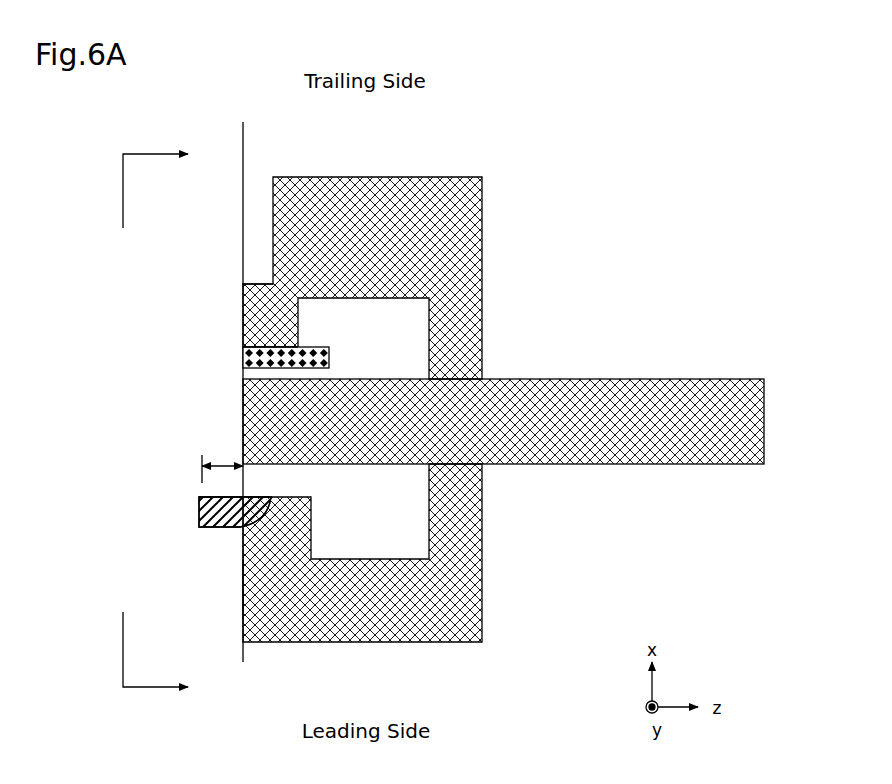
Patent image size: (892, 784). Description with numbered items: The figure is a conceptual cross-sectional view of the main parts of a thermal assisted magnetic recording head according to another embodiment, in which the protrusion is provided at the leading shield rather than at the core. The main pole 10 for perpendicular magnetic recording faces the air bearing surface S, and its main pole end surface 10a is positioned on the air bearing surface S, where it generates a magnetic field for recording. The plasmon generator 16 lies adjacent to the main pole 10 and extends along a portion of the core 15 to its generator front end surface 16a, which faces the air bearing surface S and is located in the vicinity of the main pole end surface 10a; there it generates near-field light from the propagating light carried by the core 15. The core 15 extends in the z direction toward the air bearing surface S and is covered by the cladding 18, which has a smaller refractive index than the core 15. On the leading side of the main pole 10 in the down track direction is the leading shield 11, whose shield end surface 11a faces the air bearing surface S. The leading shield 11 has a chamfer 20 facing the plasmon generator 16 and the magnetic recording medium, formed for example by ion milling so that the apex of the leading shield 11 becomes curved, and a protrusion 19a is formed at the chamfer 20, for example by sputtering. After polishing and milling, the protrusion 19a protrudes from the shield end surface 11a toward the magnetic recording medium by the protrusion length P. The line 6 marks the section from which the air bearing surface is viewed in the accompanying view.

The main pole 10 is at (385, 177).
The main pole end surface 10a is at (243, 317).
The leading shield 11 is at (357, 642).
The shield end surface 11a is at (243, 590).
The core 15 is at (570, 379).
The plasmon generator 16 is at (330, 352).
The generator front end surface 16a is at (243, 357).
The cladding 18 is at (355, 504).
The protrusion 19a is at (230, 497).
The chamfer 20 is at (258, 501).
The line 6- 6 is at (171, 421).
The protrusion length P is at (222, 461).
The air bearing surface S is at (242, 373).